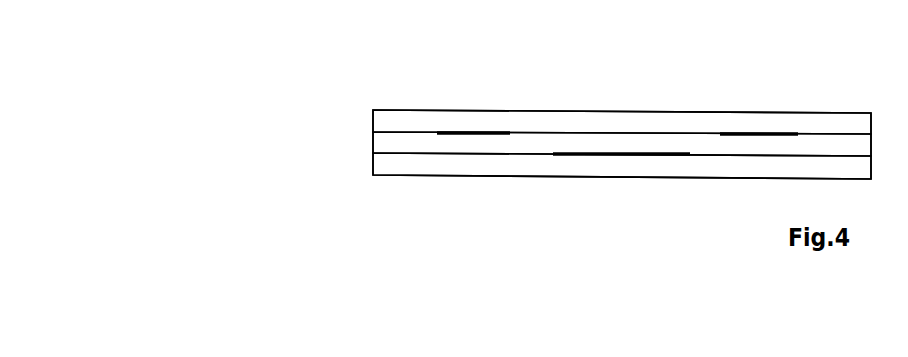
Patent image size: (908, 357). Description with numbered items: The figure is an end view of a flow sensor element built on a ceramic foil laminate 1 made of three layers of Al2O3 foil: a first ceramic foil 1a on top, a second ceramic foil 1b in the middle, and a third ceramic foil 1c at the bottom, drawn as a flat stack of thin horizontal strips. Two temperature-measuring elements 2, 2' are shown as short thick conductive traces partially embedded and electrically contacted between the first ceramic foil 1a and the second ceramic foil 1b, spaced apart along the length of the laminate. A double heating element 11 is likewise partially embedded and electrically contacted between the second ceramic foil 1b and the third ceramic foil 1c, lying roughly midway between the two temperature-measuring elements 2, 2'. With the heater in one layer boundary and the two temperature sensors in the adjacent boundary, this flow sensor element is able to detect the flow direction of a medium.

The ceramic foil laminate 1 is at (629, 112).
The first ceramic foil 1a is at (405, 123).
The second ceramic foil 1b is at (397, 142).
The third ceramic foil 1c is at (419, 168).
The temperature-measuring element 2 is at (473, 85).
The temperature-measuring element 2' is at (755, 87).
The double heating element 11 is at (613, 155).